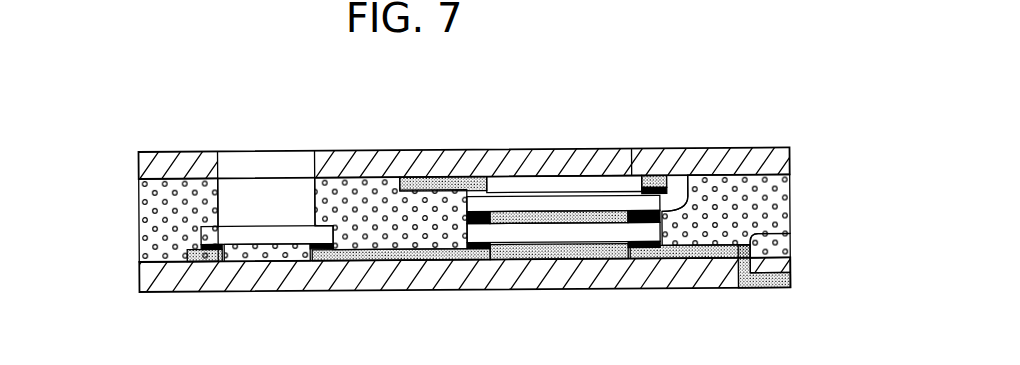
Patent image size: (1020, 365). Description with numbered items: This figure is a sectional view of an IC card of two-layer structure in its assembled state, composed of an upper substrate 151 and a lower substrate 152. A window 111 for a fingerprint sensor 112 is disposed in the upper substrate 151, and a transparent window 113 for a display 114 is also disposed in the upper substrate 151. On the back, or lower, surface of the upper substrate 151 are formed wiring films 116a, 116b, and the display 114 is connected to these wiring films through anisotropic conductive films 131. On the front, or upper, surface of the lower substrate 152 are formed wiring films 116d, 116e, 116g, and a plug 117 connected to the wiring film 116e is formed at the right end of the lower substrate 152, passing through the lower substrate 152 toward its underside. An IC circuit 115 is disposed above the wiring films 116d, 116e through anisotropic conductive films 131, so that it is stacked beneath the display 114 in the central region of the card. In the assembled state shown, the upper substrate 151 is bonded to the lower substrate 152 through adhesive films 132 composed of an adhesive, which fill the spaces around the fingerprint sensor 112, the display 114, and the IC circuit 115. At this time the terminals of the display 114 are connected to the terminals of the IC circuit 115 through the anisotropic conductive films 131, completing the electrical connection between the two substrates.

The window 111 is at (220, 166).
The fingerprint sensor 112 is at (290, 227).
The transparent window 113 is at (588, 152).
The display 114 is at (528, 206).
The IC circuit 115 is at (543, 238).
The wiring film 116a is at (428, 186).
The wiring film 116b is at (655, 184).
The wiring film 116d is at (407, 259).
The wiring film 116e is at (789, 246).
The wiring film 116g is at (187, 256).
The plug 117 is at (752, 292).
The anisotropic conductive film 131 is at (688, 199).
The adhesive film 132 is at (142, 220).
The upper substrate 151 is at (139, 165).
The lower substrate 152 is at (139, 282).